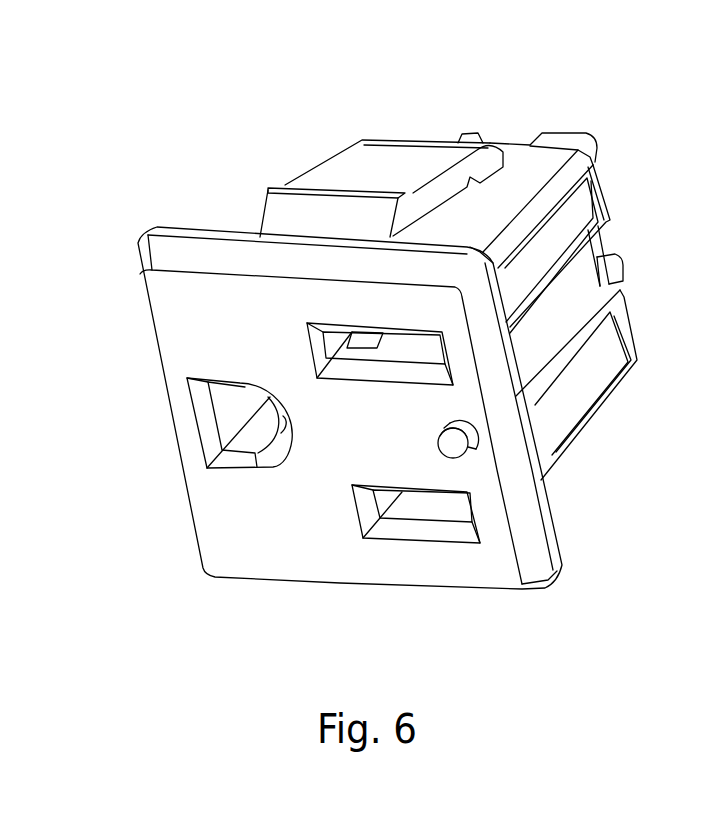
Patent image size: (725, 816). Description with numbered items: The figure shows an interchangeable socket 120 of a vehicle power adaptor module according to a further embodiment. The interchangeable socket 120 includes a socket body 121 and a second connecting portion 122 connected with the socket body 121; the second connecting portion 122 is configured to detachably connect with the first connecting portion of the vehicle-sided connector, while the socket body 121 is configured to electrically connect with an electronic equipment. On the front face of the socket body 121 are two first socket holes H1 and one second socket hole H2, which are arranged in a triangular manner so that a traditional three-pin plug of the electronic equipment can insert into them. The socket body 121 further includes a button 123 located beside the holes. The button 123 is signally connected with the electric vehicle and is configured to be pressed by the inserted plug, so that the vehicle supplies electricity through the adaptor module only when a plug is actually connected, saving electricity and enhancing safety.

The interchangeable socket 120 is at (91, 57).
The socket body 121 is at (192, 289).
The second connecting portion 122 is at (613, 264).
The button 123 is at (458, 453).
The first socket holes H1 is at (343, 347).
The second socket hole H2 is at (231, 414).